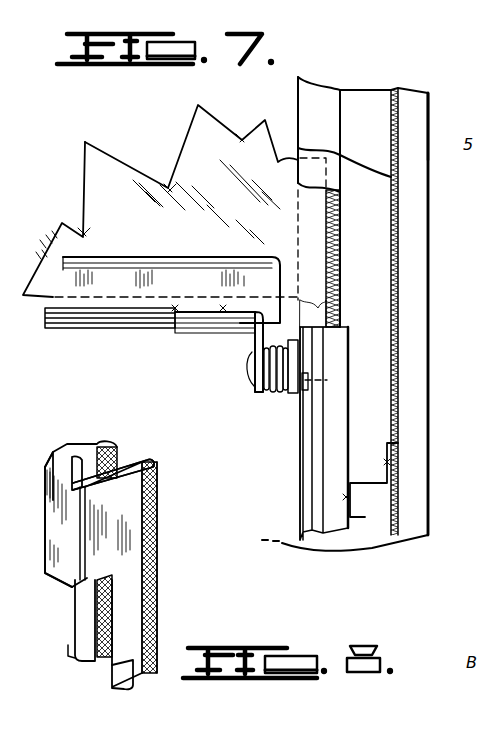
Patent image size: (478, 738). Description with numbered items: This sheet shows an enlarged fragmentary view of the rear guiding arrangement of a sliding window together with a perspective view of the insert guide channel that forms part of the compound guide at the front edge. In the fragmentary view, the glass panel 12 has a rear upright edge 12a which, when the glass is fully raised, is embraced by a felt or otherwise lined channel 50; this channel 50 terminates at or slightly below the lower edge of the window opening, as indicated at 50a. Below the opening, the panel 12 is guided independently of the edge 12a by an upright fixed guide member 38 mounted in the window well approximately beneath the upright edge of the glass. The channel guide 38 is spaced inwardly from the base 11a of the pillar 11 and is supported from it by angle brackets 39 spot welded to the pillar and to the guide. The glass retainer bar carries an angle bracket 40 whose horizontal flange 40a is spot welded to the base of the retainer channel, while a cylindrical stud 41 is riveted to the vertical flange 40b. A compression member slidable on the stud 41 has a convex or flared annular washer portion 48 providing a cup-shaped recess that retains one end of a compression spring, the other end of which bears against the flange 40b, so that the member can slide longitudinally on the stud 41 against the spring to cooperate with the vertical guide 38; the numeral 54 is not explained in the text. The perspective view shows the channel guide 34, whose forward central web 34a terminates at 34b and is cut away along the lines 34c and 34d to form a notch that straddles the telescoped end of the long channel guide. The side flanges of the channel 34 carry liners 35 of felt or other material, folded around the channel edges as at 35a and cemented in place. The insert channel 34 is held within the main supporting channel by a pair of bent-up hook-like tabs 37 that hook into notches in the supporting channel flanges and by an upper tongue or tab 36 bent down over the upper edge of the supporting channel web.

In FIG. 7, the pillar 11 is at (403, 97).
In FIG. 7, the base of the pillar 11a is at (390, 340).
In FIG. 7, the outer wall of frame 54 is at (448, 99).
In FIG. 7, the glass panel 12 is at (210, 133).
In FIG. 7, the rear upright edge 12a is at (323, 243).
In FIG. 7, the lined channel 50 is at (333, 226).
In FIG. 7, the lower termination of channel 50a is at (338, 327).
In FIG. 7, the angle bracket 40 is at (249, 340).
In FIG. 7, the horizontal flange 40a is at (198, 330).
In FIG. 7, the vertical flange 40b is at (253, 348).
In FIG. 7, the cylindrical stud 41 is at (273, 388).
In FIG. 7, the annular washer portion 48 is at (293, 400).
In FIG. 7, the fixed guide member 38 is at (332, 468).
In FIG. 7, the angle brackets 39 is at (358, 470).
In FIG. 8, the channel guide 34 is at (120, 485).
In FIG. 8, the forward central web 34a is at (50, 500).
In FIG. 8, the web termination 34b is at (83, 593).
In FIG. 8, the cut-away line 34c is at (87, 578).
In FIG. 8, the cut-away line 34d is at (113, 593).
In FIG. 8, the liners 35 is at (107, 446).
In FIG. 8, the folded liner edge 35a is at (157, 492).
In FIG. 8, the upper tongue or tab 36 is at (55, 452).
In FIG. 8, the hook-like tabs 37 is at (125, 685).